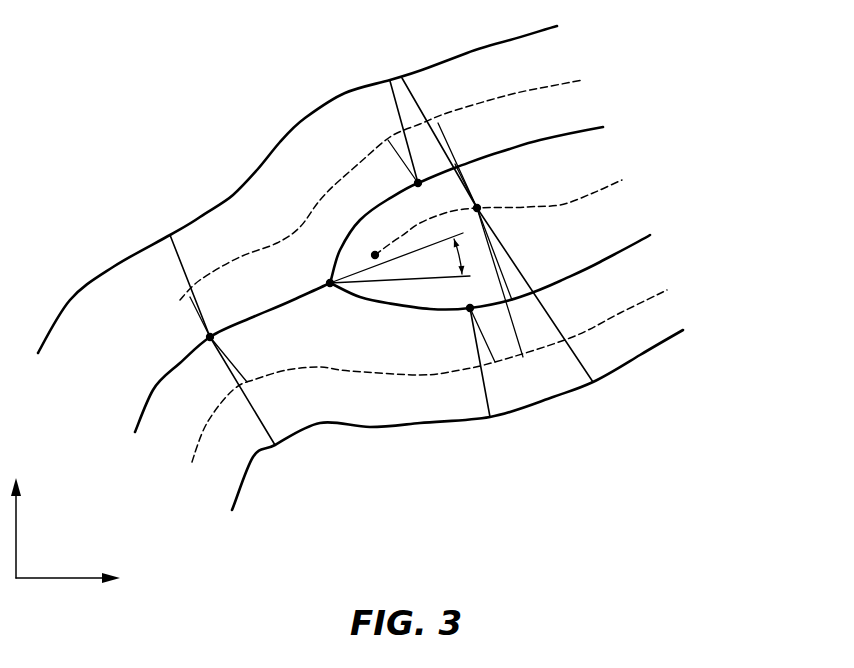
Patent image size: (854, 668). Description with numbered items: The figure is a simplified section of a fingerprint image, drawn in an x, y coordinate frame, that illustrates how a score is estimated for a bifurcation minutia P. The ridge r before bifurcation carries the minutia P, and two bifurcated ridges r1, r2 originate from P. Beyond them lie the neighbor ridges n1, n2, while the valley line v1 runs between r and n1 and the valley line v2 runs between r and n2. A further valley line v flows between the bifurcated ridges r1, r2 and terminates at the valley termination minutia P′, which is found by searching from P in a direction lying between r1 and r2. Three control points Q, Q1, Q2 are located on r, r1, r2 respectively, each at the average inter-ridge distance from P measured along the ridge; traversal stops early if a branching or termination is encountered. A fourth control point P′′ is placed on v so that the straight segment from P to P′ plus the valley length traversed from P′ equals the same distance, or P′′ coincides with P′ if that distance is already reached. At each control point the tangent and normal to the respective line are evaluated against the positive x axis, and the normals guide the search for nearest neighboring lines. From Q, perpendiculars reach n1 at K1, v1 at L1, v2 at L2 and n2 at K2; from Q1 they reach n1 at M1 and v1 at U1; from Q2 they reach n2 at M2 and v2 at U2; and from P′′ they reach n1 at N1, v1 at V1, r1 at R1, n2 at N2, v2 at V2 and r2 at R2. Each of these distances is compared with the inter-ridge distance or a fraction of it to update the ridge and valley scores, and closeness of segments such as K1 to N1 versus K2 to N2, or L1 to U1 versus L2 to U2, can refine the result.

The neighbor ridge n1 is at (318, 179).
The valley line v1 is at (399, 180).
The ridge before bifurcation r is at (227, 376).
The first bifurcated ridge r1 is at (485, 194).
The second bifurcated ridge r2 is at (505, 265).
The valley line v is at (515, 207).
The valley line v2 is at (450, 366).
The neighbor ridge n2 is at (481, 412).
The point on neighbor ridge n1 K1 is at (173, 265).
The point on valley line v1 L1 is at (181, 297).
The control point on ridge r Q is at (207, 358).
The point on valley line v2 L2 is at (249, 380).
The point on neighbor ridge n2 K2 is at (257, 415).
The point on neighbor ridge n1 M1 is at (380, 111).
The point on valley line v1 U1 is at (380, 144).
The control point on ridge r1 Q1 is at (395, 172).
The point on neighbor ridge n1 N1 is at (436, 117).
The point on valley line v1 V1 is at (450, 142).
The point on ridge r1 R1 is at (472, 163).
The control point on valley line v P′′ is at (494, 192).
The point on neighbor ridge n2 N2 is at (552, 322).
The point on valley line v2 V2 is at (525, 302).
The point on ridge r2 R2 is at (514, 278).
The control point on ridge r2 Q2 is at (454, 332).
The point on valley line v2 U2 is at (498, 360).
The point on neighbor ridge n2 M2 is at (493, 390).
The bifurcation minutia P is at (396, 278).
The valley termination minutia P′ is at (367, 244).
The x-axis x is at (79, 577).
The y-axis y is at (17, 506).